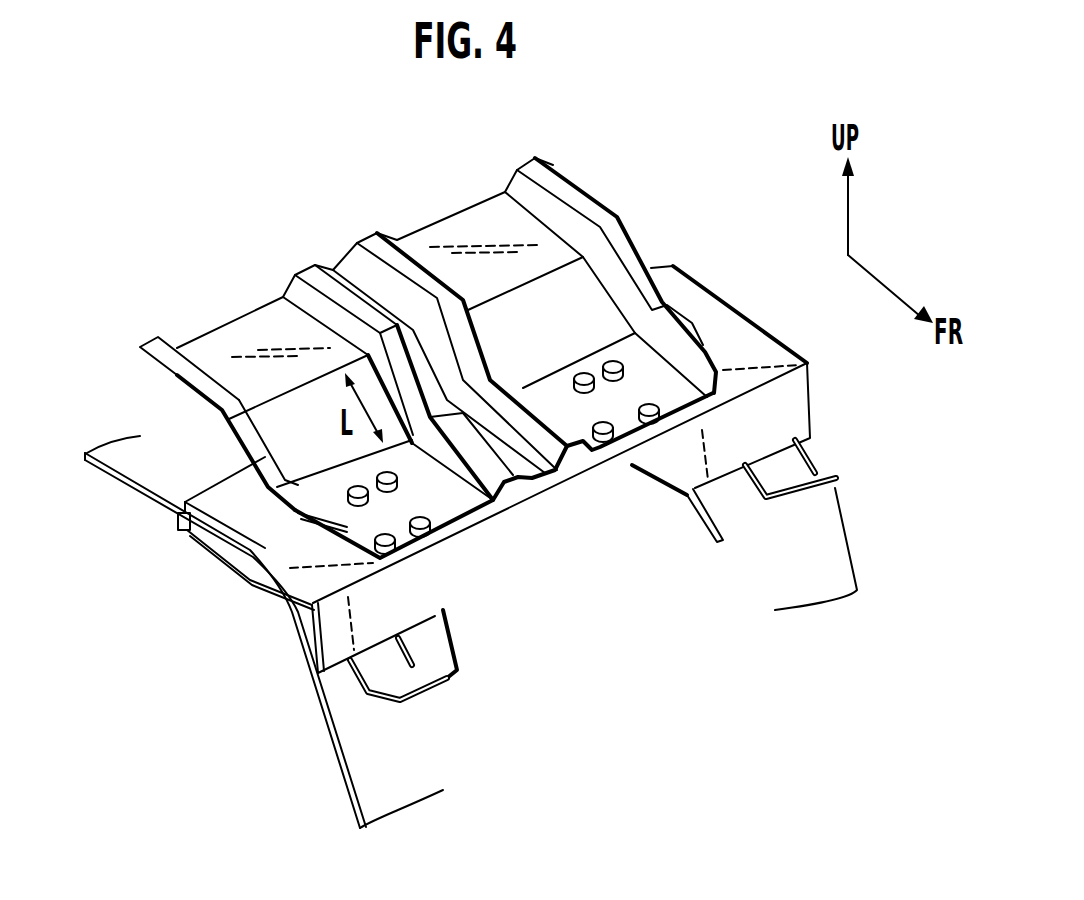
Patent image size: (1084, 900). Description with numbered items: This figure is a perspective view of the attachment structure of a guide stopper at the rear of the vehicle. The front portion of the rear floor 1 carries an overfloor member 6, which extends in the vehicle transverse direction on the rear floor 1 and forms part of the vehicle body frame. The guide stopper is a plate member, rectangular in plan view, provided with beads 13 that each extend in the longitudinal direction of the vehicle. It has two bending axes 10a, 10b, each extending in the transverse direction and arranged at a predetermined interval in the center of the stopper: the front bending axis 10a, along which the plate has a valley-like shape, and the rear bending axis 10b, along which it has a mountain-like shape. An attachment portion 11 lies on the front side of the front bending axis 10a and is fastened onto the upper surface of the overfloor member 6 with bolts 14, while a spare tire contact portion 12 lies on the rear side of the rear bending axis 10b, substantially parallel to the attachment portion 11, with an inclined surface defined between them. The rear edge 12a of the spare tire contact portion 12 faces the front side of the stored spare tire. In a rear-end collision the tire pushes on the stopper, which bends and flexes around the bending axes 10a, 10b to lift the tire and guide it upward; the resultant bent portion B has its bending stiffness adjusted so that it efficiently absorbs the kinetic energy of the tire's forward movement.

The rear floor 1 is at (148, 487).
The overfloor member 6 is at (727, 330).
The front bending axis 10a is at (335, 487).
The rear bending axis 10b is at (273, 400).
The attachment portion 11 is at (460, 500).
The spare tire contact portion 12 is at (258, 333).
The rear edge 12a is at (337, 268).
The beads 13 is at (456, 375).
The bolts 14 is at (423, 523).
The bent portion B is at (588, 338).